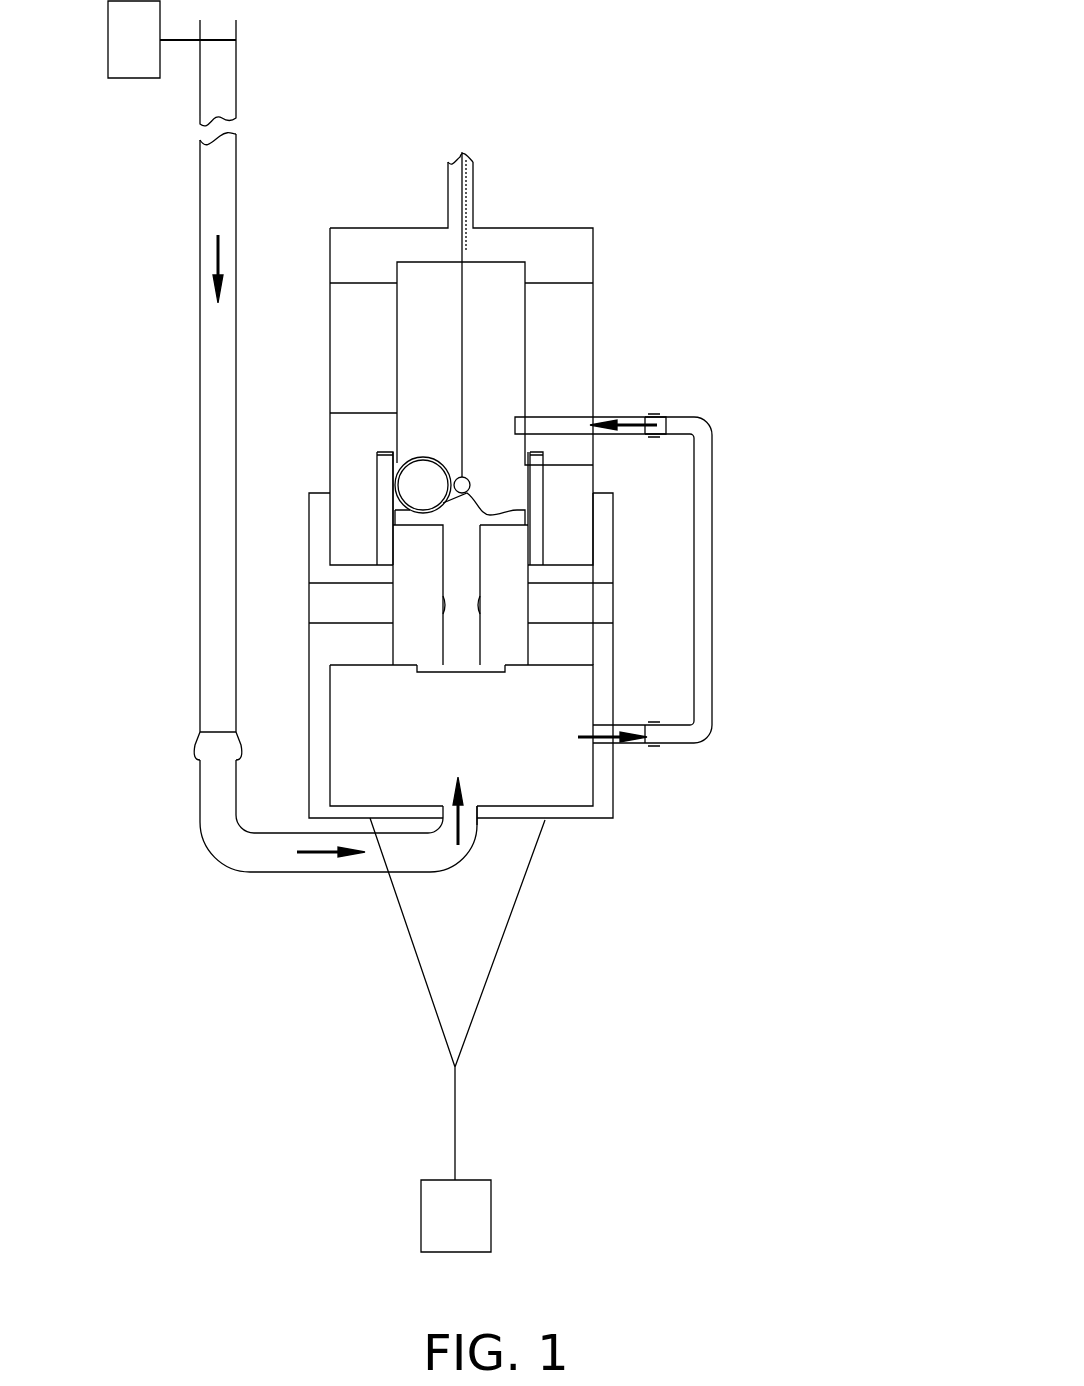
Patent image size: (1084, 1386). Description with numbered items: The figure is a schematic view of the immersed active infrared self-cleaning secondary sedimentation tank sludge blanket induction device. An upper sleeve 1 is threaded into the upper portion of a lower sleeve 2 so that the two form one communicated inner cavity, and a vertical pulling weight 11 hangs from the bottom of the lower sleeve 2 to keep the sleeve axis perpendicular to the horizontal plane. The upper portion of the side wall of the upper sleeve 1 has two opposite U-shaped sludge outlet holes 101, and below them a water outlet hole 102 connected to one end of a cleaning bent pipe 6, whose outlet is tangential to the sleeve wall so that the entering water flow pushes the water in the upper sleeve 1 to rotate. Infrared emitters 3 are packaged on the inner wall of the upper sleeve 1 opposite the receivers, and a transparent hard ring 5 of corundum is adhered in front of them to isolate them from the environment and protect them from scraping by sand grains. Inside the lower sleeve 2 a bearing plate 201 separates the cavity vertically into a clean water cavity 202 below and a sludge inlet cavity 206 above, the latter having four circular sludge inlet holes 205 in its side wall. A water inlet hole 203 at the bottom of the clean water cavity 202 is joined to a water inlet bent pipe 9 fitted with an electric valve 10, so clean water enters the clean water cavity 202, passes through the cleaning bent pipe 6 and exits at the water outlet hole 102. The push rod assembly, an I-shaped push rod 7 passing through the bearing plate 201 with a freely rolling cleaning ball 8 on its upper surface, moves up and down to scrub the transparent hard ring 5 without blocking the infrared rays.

The upper sleeve 1 is at (593, 347).
The U-shaped sludge outlet holes 101 is at (562, 310).
The water outlet hole 102 is at (518, 425).
The lower sleeve 2 is at (613, 795).
The bearing plate 201 is at (523, 663).
The clean water cavity 202 is at (513, 697).
The water inlet hole 203 is at (480, 807).
The circular sludge inlet holes 205 is at (378, 613).
The sludge inlet cavity 206 is at (400, 637).
The infrared emitters 3 is at (455, 484).
The transparent hard ring 5 is at (378, 553).
The cleaning bent pipe 6 is at (673, 415).
The I-shaped push rod 7 is at (480, 600).
The cleaning ball 8 is at (422, 486).
The water inlet bent pipe 9 is at (478, 833).
The electric valve 10 is at (150, 62).
The vertical pulling weight 11 is at (491, 1213).